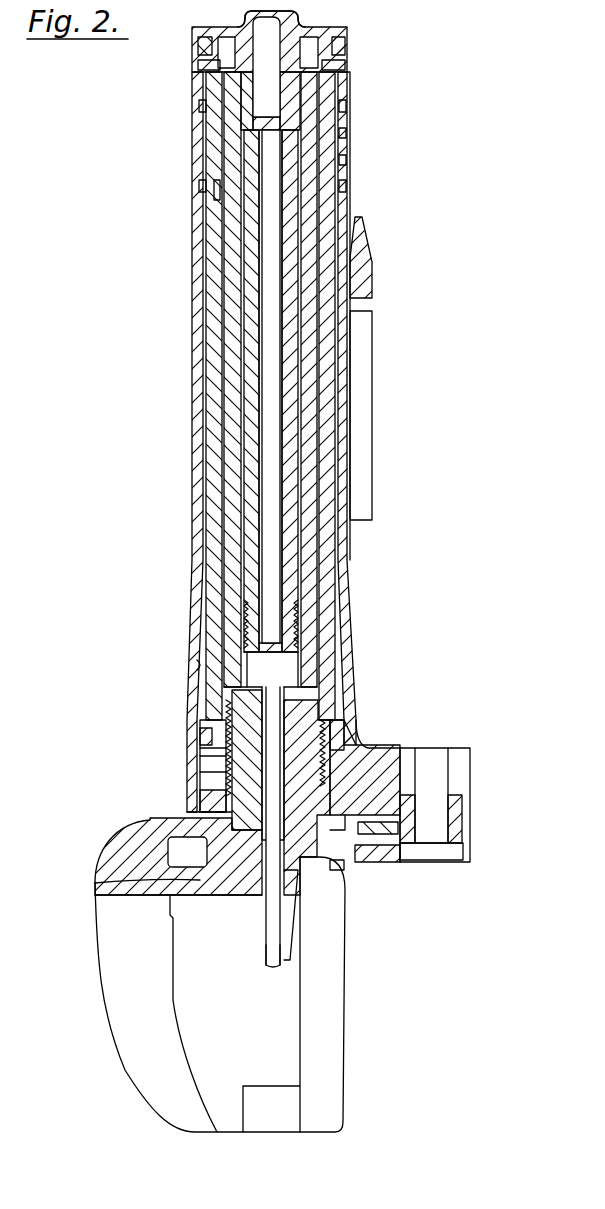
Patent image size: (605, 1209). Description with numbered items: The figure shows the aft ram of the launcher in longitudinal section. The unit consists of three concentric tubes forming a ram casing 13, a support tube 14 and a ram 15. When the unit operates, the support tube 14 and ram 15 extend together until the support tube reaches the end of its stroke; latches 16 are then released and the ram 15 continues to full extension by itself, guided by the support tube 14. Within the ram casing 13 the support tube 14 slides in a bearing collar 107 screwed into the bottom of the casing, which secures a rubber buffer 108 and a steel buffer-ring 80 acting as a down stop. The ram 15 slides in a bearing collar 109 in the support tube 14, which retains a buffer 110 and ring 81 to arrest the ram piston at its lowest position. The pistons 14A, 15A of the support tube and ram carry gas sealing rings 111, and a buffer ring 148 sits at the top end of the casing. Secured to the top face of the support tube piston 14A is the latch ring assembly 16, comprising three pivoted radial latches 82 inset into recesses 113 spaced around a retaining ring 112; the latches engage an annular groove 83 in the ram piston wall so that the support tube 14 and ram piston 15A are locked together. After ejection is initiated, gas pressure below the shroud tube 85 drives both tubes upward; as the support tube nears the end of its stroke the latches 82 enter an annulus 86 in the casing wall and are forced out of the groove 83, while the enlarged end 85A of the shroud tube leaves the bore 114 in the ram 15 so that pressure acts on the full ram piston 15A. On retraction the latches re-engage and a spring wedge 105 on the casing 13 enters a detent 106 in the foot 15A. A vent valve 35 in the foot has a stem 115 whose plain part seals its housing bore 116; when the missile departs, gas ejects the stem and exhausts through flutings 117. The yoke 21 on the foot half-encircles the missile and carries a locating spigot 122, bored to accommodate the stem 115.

The ram casing 13 is at (352, 648).
The support tube 14 is at (350, 634).
The support tube piston 14A is at (348, 160).
The ram 15 is at (310, 694).
The ram piston 15A is at (348, 132).
The latch ring assembly 16 is at (352, 88).
The yoke 21 is at (288, 1046).
The vent valve 35 is at (225, 790).
The steel buffer-ring 80 is at (350, 718).
The ring 81 is at (200, 745).
The latch 82 is at (338, 76).
The annular groove 83 is at (212, 126).
The shroud tube 85 is at (325, 608).
The enlarged end of shroud tube 85A is at (245, 625).
The annulus 86 is at (200, 665).
The spring wedge 105 is at (313, 863).
The detent 106 is at (405, 862).
The bearing collar 107 is at (400, 742).
The rubber buffer 108 is at (400, 733).
The bearing collar 109 is at (210, 800).
The buffer 110 is at (225, 760).
The gas sealing rings 111 is at (350, 108).
The retaining ring 112 is at (200, 88).
The recess 113 is at (220, 190).
The bore 114 is at (287, 562).
The vent valve stem 115 is at (280, 950).
The housing bore 116 is at (277, 910).
The flutings 117 is at (300, 957).
The locating spigot 122 is at (300, 910).
The buffer ring 148 is at (340, 64).